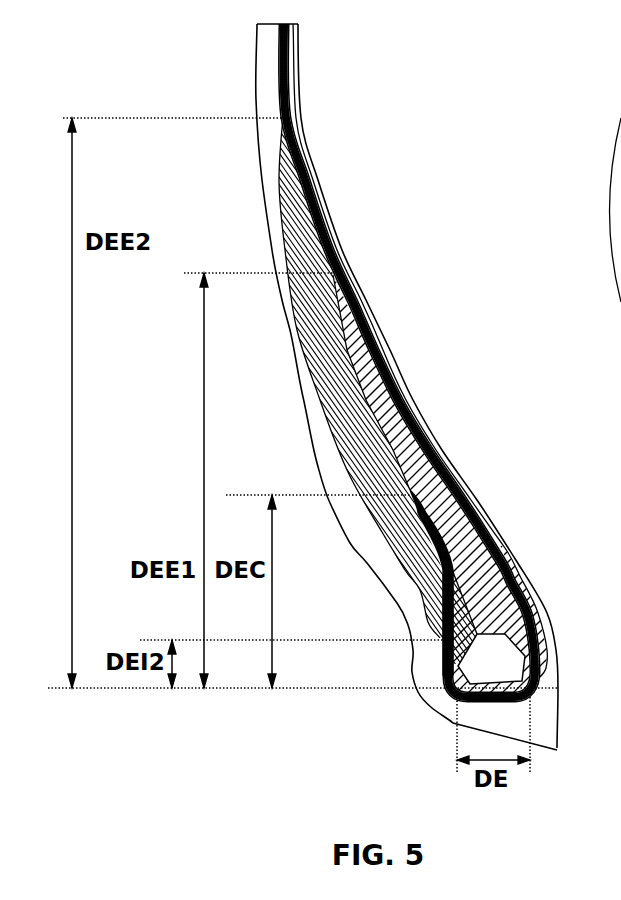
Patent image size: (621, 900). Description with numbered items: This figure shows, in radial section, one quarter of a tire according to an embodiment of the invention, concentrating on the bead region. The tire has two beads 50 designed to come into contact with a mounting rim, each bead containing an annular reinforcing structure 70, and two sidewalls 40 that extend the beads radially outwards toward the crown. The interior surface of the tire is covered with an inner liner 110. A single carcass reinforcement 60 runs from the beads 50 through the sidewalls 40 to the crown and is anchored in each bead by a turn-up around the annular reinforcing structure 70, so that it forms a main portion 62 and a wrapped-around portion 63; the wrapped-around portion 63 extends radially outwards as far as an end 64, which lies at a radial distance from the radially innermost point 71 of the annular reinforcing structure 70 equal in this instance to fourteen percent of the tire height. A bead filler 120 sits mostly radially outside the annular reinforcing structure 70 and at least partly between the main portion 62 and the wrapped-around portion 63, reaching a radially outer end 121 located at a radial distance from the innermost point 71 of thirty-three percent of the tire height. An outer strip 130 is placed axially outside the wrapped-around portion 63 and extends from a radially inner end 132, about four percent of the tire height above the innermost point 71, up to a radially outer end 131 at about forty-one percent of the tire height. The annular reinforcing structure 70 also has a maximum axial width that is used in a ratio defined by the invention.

The sidewall 40 is at (270, 243).
The bead 50 is at (414, 654).
The carcass reinforcement 60 is at (318, 206).
The main portion 62 is at (493, 537).
The wrapped-around portion 63 is at (443, 567).
The end of the wrapped-around portion 64 is at (407, 489).
The annular reinforcing structure 70 is at (490, 660).
The radially innermost point of the annular reinforcing structure 71 is at (497, 700).
The inner liner 110 is at (430, 432).
The bead filler 120 is at (505, 593).
The radially outer end of the bead filler 121 is at (338, 270).
The outer strip 130 is at (320, 360).
The radially outer end of the outer strip 131 is at (280, 115).
The radially inner end of the outer strip 132 is at (440, 639).